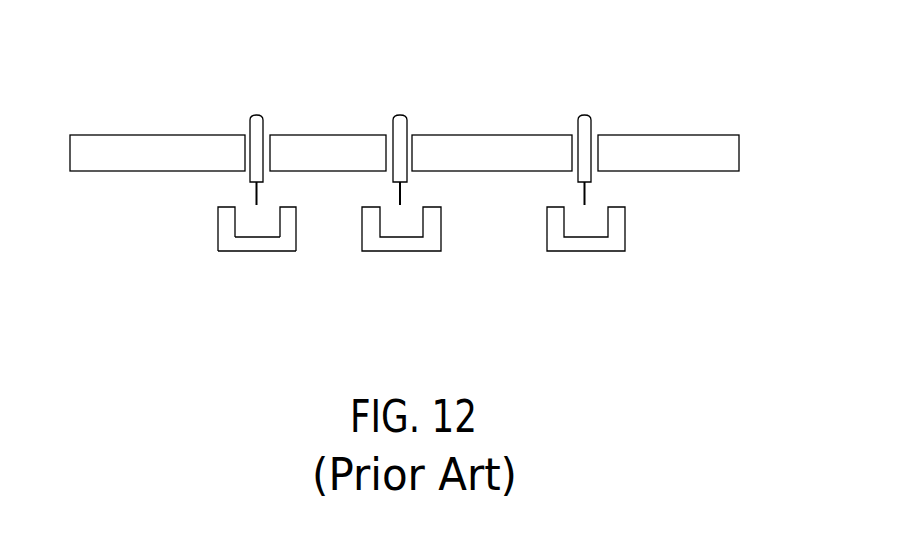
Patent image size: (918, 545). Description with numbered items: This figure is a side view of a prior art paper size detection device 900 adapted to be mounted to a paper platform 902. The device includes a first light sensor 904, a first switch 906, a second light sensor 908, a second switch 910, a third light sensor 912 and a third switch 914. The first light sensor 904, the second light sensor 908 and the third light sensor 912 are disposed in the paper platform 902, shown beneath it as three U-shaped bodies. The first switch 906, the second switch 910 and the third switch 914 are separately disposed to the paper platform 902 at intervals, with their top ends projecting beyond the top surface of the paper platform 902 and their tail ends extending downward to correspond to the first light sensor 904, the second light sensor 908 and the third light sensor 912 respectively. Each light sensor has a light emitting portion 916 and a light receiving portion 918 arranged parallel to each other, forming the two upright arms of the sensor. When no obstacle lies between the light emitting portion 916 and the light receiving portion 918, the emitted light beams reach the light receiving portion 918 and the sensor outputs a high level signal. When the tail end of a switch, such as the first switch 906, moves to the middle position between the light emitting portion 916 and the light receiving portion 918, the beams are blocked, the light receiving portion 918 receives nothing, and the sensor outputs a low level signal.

The paper size detection device 900 is at (108, 280).
The paper platform 902 is at (712, 139).
The first light sensor 904 is at (250, 250).
The first switch 906 is at (250, 117).
The second light sensor 908 is at (432, 252).
The second switch 910 is at (397, 117).
The third light sensor 912 is at (625, 235).
The third switch 914 is at (580, 115).
The light emitting portion 916 is at (227, 223).
The light receiving portion 918 is at (290, 228).